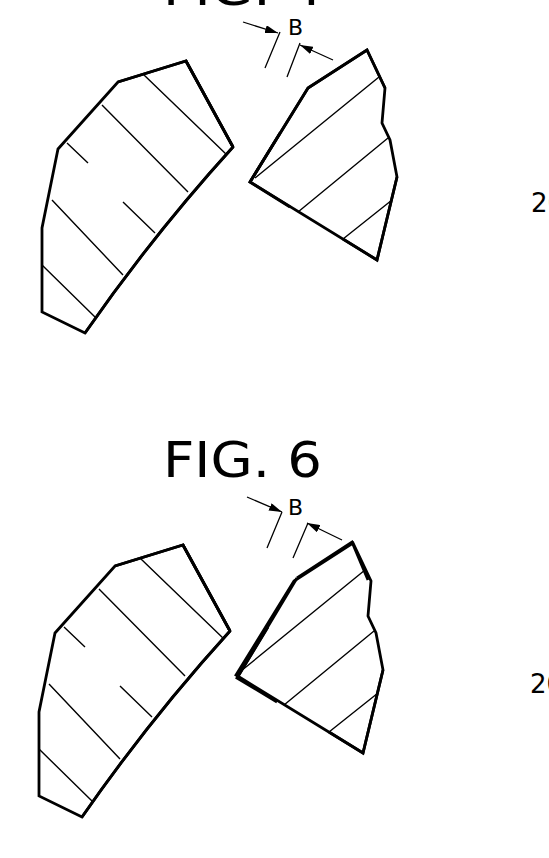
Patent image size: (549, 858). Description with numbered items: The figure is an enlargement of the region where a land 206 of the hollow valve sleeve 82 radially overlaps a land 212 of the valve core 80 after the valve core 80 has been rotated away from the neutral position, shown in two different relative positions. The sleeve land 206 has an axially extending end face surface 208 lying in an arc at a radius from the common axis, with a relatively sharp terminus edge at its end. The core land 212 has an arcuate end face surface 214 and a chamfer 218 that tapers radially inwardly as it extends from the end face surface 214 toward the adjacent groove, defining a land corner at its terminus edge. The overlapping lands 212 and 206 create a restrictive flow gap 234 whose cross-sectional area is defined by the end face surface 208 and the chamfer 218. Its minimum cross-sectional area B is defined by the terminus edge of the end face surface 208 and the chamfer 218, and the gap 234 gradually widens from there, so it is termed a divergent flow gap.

In FIG. 4, the valve core 80 is at (340, 163).
In FIG. 6, the valve core 80 is at (309, 648).
In FIG. 4, the valve sleeve 82 is at (127, 195).
In FIG. 6, the valve sleeve 82 is at (134, 681).
In FIG. 4, the land 206 is at (180, 77).
In FIG. 6, the land 206 is at (172, 566).
In FIG. 4, the end face surface 208 is at (103, 303).
In FIG. 6, the end face surface 208 is at (156, 740).
In FIG. 4, the land 212 is at (367, 238).
In FIG. 6, the land 212 is at (349, 734).
In FIG. 4, the end face surface 214 is at (349, 52).
In FIG. 6, the end face surface 214 is at (330, 556).
In FIG. 4, the chamfer 218 is at (250, 167).
In FIG. 6, the chamfer 218 is at (243, 662).
In FIG. 4, the flow gap 234 is at (250, 124).
In FIG. 6, the flow gap 234 is at (248, 603).